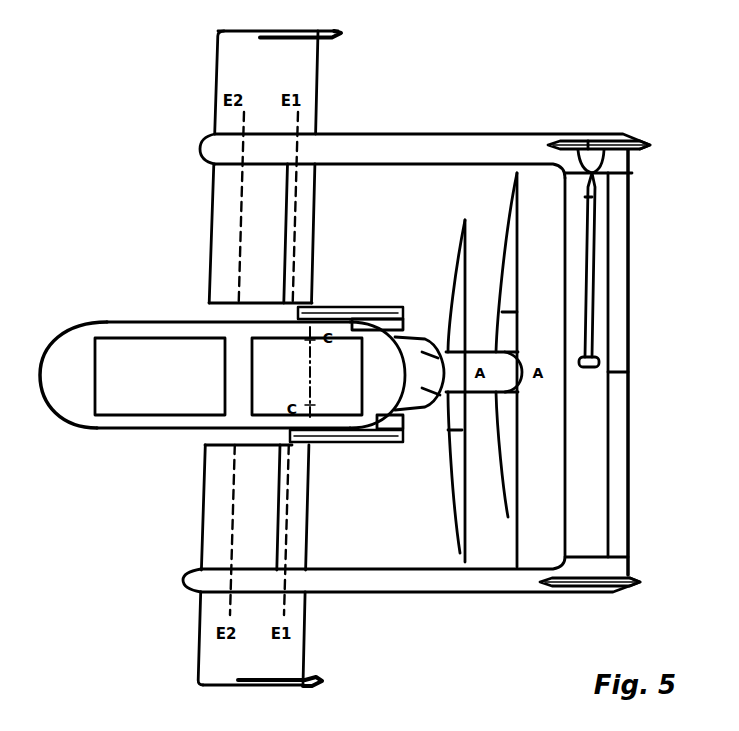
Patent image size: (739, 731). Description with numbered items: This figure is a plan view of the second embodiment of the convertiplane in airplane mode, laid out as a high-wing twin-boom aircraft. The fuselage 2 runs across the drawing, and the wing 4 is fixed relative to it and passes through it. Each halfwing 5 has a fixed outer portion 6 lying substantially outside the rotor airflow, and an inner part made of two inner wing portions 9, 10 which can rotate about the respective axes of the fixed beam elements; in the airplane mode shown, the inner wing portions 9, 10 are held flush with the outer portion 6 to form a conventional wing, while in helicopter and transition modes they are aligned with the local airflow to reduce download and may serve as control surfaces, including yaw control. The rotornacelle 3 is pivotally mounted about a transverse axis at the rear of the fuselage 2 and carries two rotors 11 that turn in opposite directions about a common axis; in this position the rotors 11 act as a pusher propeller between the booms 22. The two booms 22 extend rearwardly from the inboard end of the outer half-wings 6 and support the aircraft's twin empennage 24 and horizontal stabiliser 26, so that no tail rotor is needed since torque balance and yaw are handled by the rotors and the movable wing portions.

The fuselage 2 is at (93, 433).
The rotornacelle 3 is at (421, 372).
The wing 4 is at (165, 638).
The halfwing 5 is at (323, 58).
The outer portion 6 is at (270, 70).
The inner wing portion 9 is at (294, 508).
The inner wing portion 10 is at (255, 532).
The rotor 11 is at (460, 555).
The boom 22 is at (452, 148).
The twin empennage 24 is at (643, 497).
The horizontal stabiliser 26 is at (578, 462).